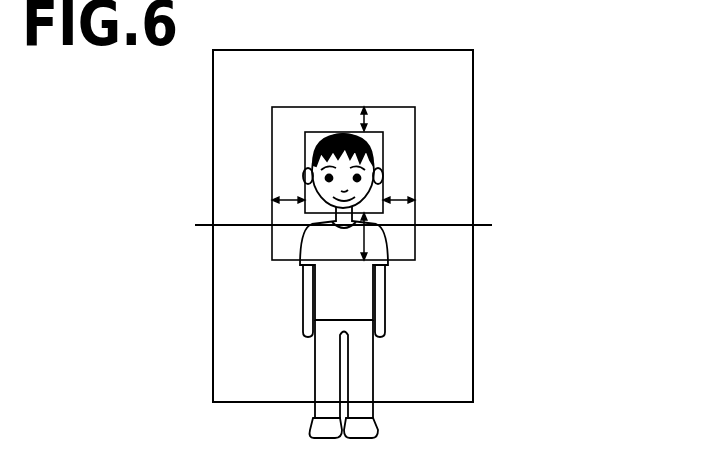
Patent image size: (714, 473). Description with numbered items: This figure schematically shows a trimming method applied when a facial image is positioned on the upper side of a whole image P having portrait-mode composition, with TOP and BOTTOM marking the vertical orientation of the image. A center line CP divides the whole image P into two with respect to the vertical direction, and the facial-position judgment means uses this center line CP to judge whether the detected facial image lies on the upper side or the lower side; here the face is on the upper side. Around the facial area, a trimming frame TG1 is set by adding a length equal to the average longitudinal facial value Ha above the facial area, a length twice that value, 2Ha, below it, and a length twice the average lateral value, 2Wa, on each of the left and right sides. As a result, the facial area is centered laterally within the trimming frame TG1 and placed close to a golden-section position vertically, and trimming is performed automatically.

The whole image P is at (457, 50).
The trimming frame TG1 is at (297, 107).
The average value of facial images in the longitudinal direction Ha is at (367, 122).
The twice the average longitudinal value 2Ha is at (368, 252).
The twice the average lateral value 2Wa is at (288, 198).
The center line CP is at (357, 214).
The top of the whole image TOP is at (510, 51).
The bottom of the whole image BOTTOM is at (539, 403).